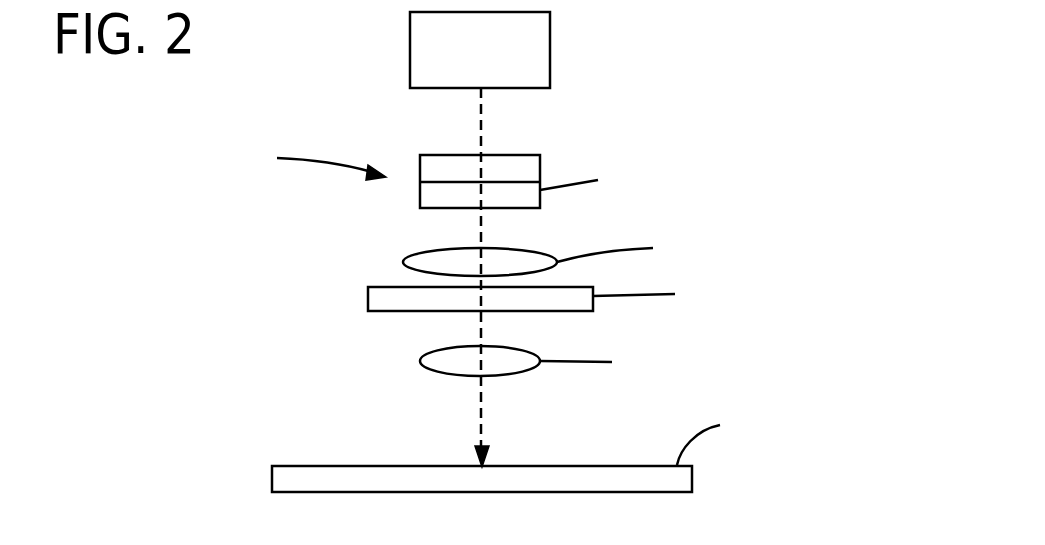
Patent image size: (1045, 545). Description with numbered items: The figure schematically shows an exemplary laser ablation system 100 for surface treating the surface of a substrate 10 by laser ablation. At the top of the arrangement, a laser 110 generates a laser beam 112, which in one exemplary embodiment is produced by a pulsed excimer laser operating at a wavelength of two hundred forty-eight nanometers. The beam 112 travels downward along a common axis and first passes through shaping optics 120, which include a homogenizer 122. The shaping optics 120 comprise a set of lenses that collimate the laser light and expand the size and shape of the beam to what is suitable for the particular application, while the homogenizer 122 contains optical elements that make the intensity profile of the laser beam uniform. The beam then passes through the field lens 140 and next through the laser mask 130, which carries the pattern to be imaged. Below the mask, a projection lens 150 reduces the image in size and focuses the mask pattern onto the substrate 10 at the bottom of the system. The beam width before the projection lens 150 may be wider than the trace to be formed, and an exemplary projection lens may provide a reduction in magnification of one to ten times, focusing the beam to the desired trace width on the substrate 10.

The laser ablation system 100 is at (727, 99).
The laser 110 is at (540, 50).
The laser beam 112 is at (482, 107).
The shaping optics 120 is at (407, 163).
The homogenizer 122 is at (420, 200).
The field lens 140 is at (403, 262).
The laser mask 130 is at (368, 297).
The projection lens 150 is at (422, 360).
The substrate 10 is at (272, 480).